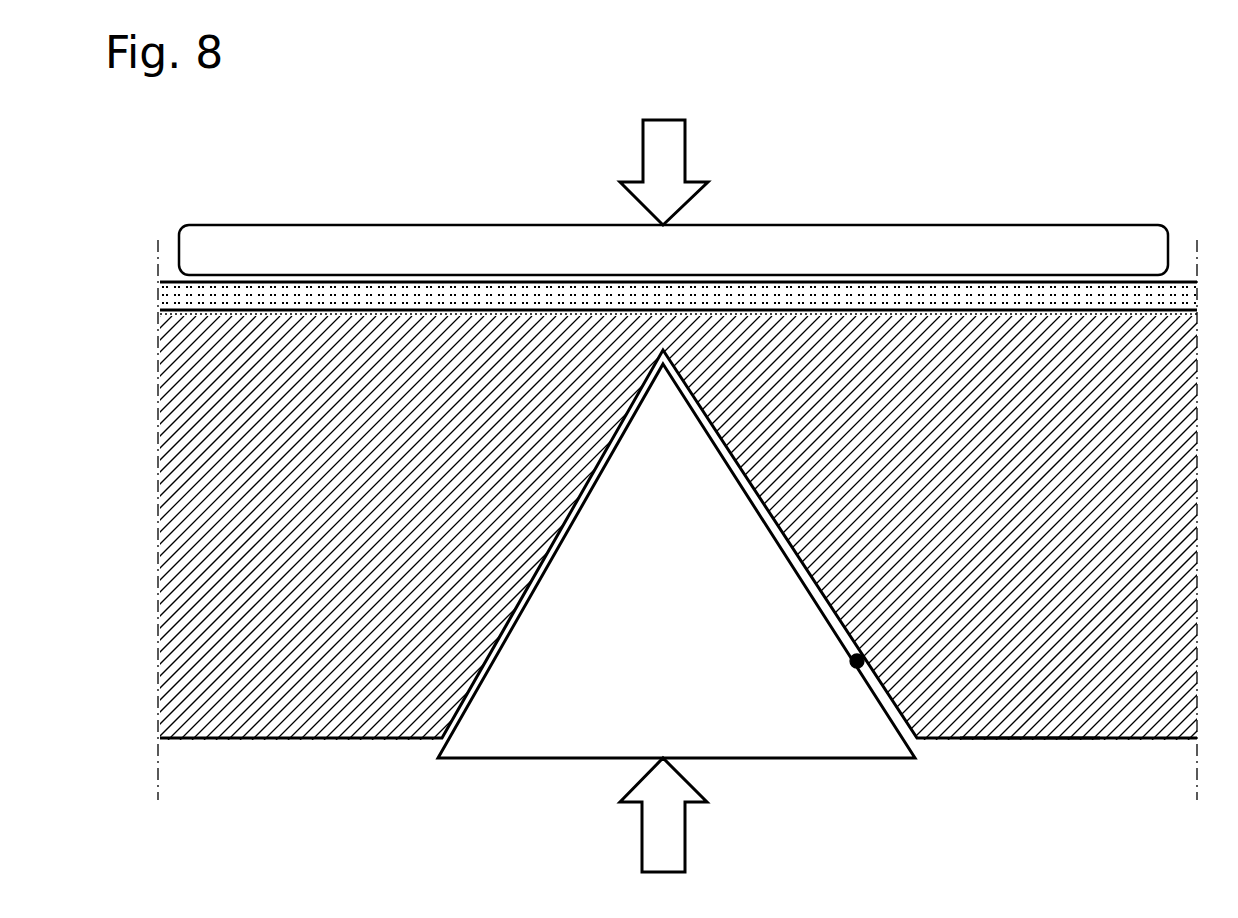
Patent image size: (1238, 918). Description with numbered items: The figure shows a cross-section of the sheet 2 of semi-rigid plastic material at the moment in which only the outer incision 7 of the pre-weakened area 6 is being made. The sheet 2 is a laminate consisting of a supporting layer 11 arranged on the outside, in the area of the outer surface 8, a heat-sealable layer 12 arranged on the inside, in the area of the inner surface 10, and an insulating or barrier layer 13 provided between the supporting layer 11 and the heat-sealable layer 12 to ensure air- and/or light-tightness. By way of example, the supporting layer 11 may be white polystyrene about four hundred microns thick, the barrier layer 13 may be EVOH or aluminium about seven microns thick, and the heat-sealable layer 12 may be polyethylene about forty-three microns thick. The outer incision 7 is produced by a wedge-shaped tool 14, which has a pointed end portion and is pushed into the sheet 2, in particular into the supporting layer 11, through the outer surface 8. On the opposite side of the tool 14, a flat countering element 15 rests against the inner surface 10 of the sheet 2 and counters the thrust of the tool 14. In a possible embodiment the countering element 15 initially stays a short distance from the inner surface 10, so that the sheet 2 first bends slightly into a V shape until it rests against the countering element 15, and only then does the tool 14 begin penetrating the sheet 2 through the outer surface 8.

The sheet of semi-rigid plastic material 2 is at (1073, 185).
The pre-weakened area 6 is at (580, 793).
The outer incision 7 is at (857, 668).
The outer surface 8 is at (1024, 740).
The inner surface 10 is at (173, 283).
The supporting layer 11 is at (1120, 695).
The heat-sealable layer 12 is at (320, 298).
The barrier layer 13 is at (1000, 312).
The wedge-shaped tool 14 is at (505, 715).
The countering element 15 is at (783, 248).